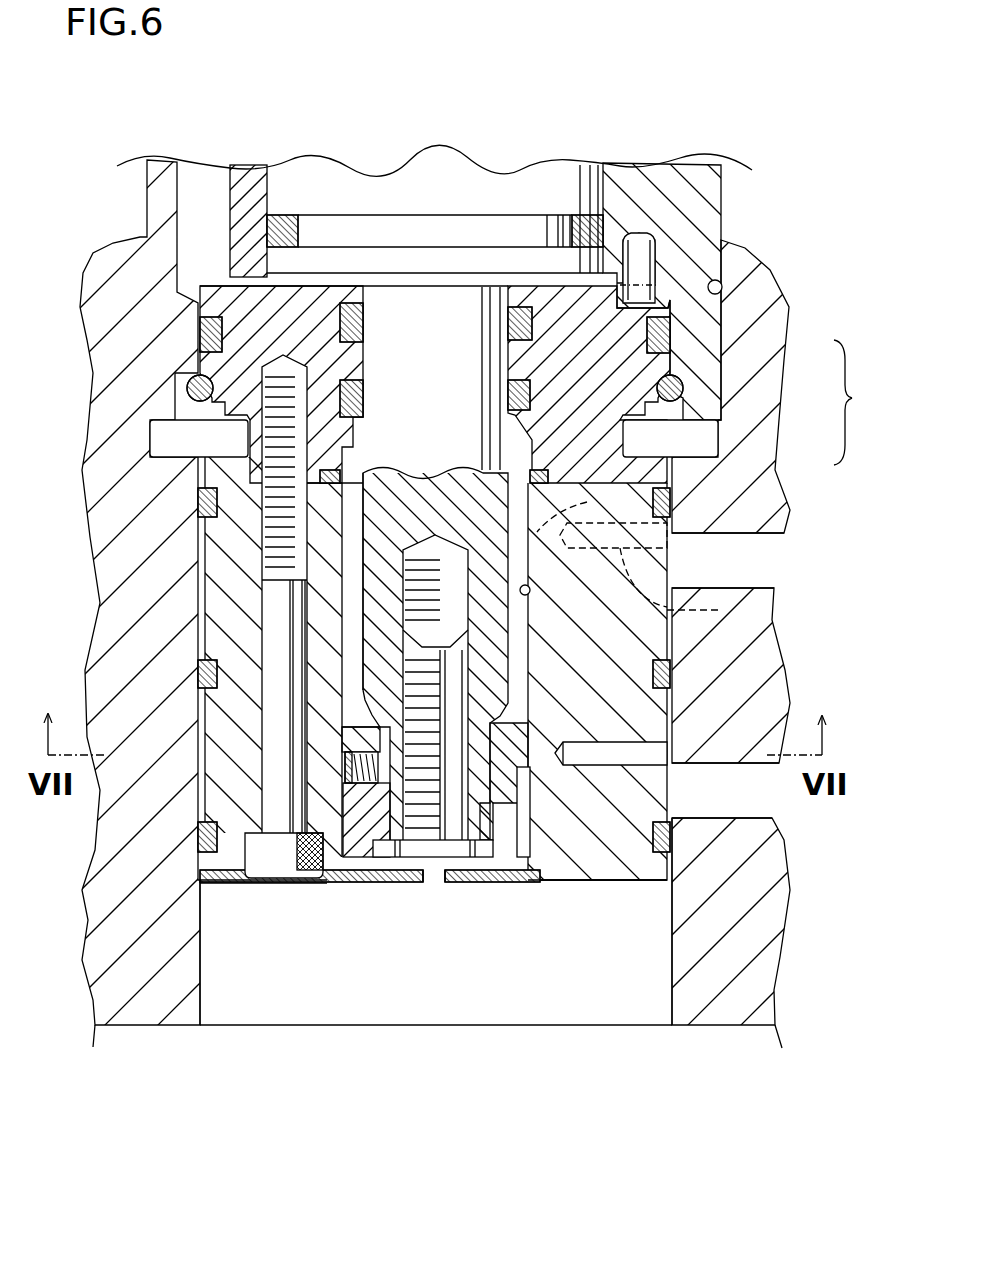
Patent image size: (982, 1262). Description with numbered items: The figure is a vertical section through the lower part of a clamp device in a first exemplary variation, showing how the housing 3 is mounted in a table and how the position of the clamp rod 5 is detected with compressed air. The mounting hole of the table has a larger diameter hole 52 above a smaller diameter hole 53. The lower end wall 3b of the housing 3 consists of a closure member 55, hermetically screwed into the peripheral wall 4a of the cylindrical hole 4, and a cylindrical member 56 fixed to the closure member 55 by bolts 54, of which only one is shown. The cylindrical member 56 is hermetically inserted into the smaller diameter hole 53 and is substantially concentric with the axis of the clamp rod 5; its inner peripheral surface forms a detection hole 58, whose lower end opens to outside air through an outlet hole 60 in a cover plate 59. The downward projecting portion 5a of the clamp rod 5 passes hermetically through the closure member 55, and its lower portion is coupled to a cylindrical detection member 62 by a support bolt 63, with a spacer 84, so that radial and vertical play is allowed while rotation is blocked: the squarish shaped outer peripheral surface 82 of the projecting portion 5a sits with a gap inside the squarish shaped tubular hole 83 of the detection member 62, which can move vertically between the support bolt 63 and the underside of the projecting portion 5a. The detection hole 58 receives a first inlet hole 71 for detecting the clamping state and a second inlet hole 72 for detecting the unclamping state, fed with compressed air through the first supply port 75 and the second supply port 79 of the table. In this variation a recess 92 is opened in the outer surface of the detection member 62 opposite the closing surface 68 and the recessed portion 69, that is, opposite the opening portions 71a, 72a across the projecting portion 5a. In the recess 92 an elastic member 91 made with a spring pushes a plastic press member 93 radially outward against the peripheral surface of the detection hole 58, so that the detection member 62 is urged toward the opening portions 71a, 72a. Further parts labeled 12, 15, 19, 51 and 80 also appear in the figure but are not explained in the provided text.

The housing 3 is at (735, 192).
The lower end wall 3b is at (864, 402).
The cylindrical hole 4 is at (602, 183).
The peripheral wall 4a is at (695, 250).
The clamp rod 5 is at (465, 388).
The projecting portion 5a is at (514, 650).
The piston 12 is at (487, 357).
The cover plate 15 is at (352, 165).
The piston top face 19 is at (390, 297).
The bore 51 is at (408, 917).
The larger diameter hole 52 is at (722, 288).
The smaller diameter hole 53 is at (669, 987).
The bolts 54 is at (203, 870).
The closure member 55 is at (662, 352).
The cylindrical member 56 is at (716, 458).
The detection hole 58 is at (530, 590).
The cover plate 59 is at (527, 877).
The outlet hole 60 is at (438, 873).
The detection member 62 is at (533, 830).
The support bolt 63 is at (462, 852).
The closing surface 68 is at (528, 747).
The recessed portion 69 is at (524, 826).
The first inlet hole 71 is at (662, 576).
The opening portion 71a is at (591, 510).
The second inlet hole 72 is at (672, 717).
The opening portion 72a is at (558, 766).
The first supply port 75 is at (762, 560).
The second supply port 79 is at (747, 798).
The pin 80 is at (643, 230).
The squarish shaped outer peripheral surface 82 is at (373, 737).
The squarish shaped tubular hole 83 is at (390, 763).
The spacer 84 is at (358, 857).
The elastic member 91 is at (310, 790).
The recess 92 is at (313, 870).
The press member 93 is at (343, 765).